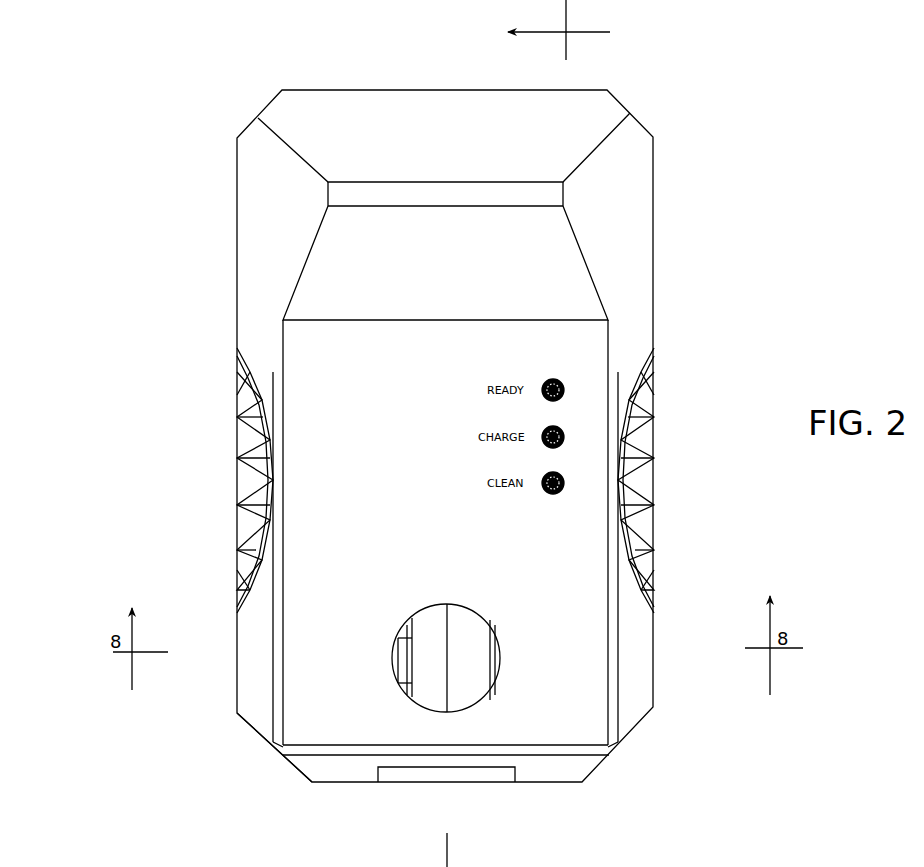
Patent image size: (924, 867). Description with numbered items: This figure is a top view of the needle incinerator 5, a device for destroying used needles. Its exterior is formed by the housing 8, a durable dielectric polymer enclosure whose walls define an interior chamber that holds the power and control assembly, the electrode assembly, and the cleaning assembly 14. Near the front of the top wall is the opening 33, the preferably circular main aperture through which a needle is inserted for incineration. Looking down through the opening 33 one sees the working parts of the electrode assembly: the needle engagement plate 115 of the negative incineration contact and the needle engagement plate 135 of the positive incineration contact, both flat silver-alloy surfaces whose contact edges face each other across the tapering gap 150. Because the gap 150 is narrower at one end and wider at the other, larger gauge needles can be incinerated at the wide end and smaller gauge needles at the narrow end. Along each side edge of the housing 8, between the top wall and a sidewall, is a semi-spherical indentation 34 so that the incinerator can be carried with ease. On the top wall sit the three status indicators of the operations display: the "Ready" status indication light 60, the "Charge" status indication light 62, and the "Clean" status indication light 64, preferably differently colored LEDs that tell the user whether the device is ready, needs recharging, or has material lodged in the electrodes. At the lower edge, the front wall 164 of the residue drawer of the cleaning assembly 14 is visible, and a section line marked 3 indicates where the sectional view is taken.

The section line 3- 3 is at (528, 433).
The needle incinerator 5 is at (140, 182).
The housing 8 is at (638, 178).
The cleaning assembly 14 is at (474, 788).
The opening 33 is at (472, 611).
The semi-spherical indentation 34 is at (246, 470).
The "Ready" status indication light 60 is at (556, 379).
The "Charge" status indication light 62 is at (562, 428).
The "Clean" status indication light 64 is at (566, 474).
The needle engagement plate 115 is at (428, 626).
The needle engagement plate 135 is at (472, 643).
The tapering gap 150 is at (450, 714).
The front wall 164 is at (304, 770).